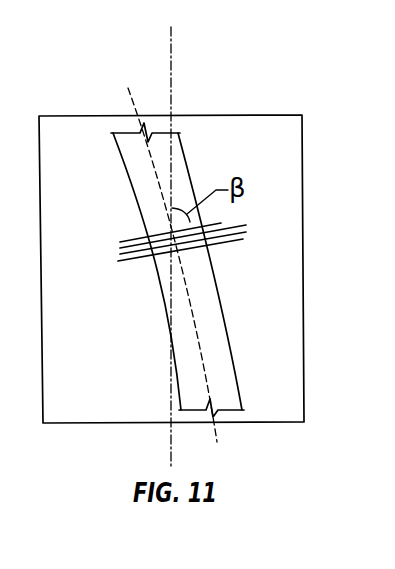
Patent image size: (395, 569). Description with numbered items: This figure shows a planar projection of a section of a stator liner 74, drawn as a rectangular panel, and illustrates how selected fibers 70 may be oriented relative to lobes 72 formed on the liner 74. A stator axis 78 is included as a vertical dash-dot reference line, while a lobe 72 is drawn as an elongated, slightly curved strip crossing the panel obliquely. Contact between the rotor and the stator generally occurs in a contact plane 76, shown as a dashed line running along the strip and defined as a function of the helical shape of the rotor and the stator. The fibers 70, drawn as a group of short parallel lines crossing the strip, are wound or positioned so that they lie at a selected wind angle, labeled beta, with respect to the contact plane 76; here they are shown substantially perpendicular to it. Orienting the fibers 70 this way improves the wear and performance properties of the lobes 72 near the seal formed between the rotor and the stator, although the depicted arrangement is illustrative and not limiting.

The fibers 70 is at (205, 254).
The lobes 72 is at (155, 245).
The liner 74 is at (200, 269).
The contact plane 76 is at (208, 281).
The stator axis 78 is at (205, 242).